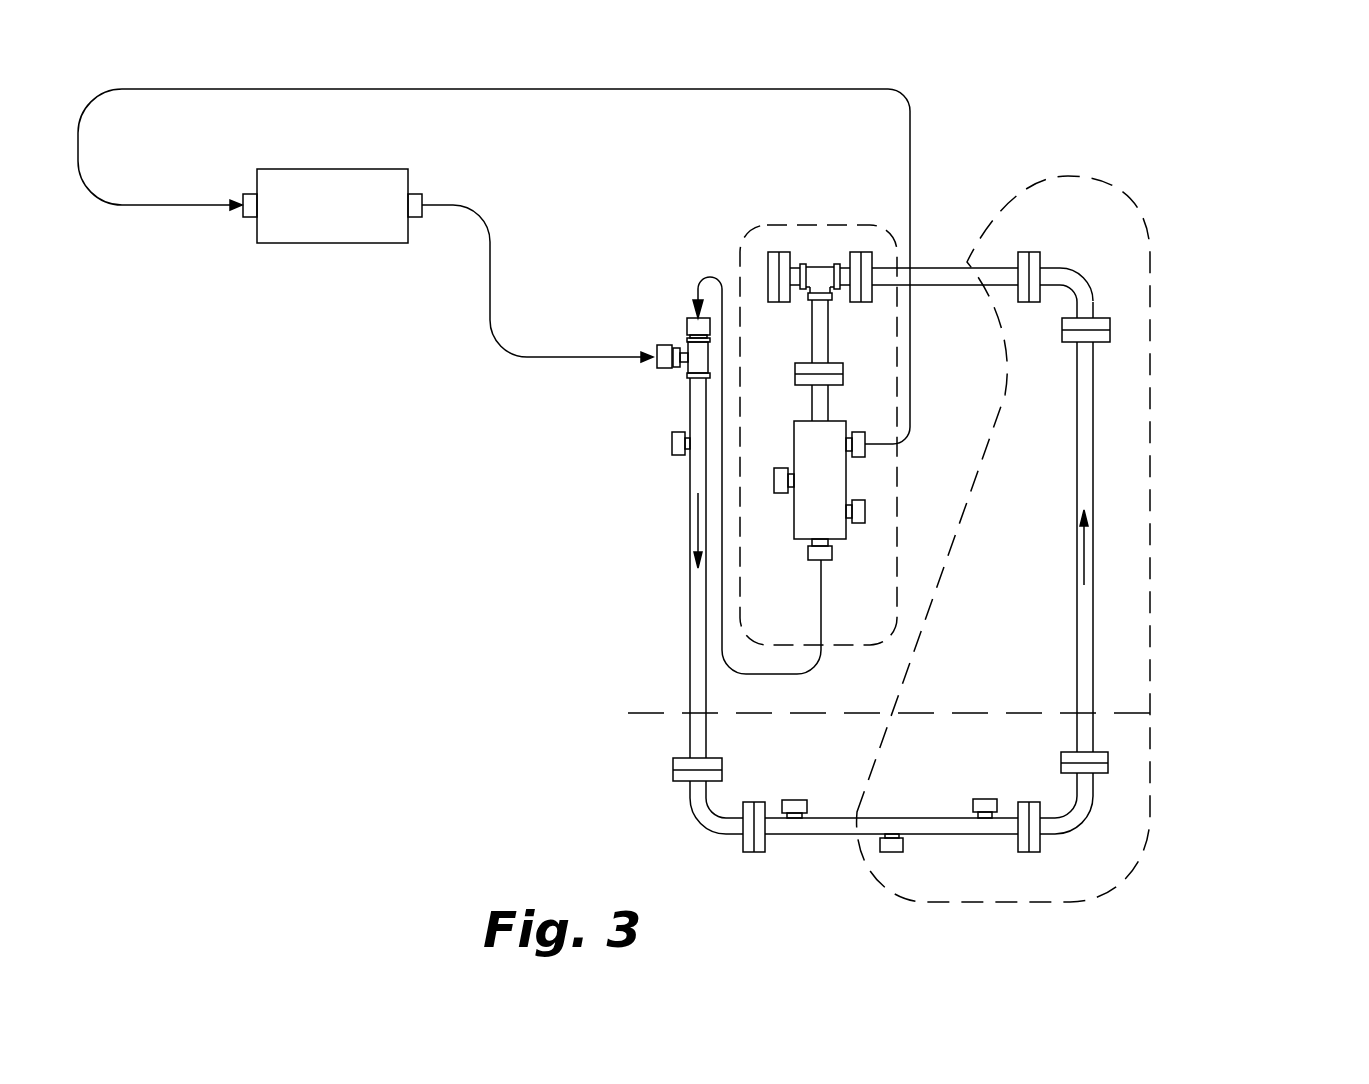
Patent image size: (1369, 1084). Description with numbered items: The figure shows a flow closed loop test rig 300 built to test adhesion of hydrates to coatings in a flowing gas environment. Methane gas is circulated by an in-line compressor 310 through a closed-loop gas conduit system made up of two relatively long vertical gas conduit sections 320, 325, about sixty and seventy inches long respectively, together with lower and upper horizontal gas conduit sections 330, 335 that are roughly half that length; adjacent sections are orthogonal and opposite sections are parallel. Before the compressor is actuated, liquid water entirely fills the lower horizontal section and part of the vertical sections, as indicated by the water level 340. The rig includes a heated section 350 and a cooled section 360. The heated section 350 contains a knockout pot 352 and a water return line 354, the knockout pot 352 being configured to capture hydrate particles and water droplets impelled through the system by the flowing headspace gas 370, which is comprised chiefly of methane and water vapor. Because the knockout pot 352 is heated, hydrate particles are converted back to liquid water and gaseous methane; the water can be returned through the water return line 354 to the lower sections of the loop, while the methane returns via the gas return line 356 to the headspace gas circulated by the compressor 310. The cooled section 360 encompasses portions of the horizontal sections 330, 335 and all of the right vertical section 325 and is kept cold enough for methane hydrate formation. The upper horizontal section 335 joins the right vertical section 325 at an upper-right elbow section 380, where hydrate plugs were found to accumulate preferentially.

The flow closed loop test rig 300 is at (1246, 166).
The in-line compressor 310 is at (323, 243).
The vertical gas conduit section 320 is at (690, 620).
The right vertical gas conduit section 325 is at (1093, 432).
The lower horizontal gas conduit section 330 is at (805, 835).
The upper horizontal gas conduit section 335 is at (937, 268).
The water level 340 is at (650, 713).
The heated section 350 is at (787, 413).
The knockout pot 352 is at (840, 480).
The water return line 354 is at (813, 663).
The gas return line 356 is at (547, 90).
The cooled section 360 is at (997, 420).
The flowing headspace gas 370 is at (697, 535).
The upper-right elbow section 380 is at (1085, 276).